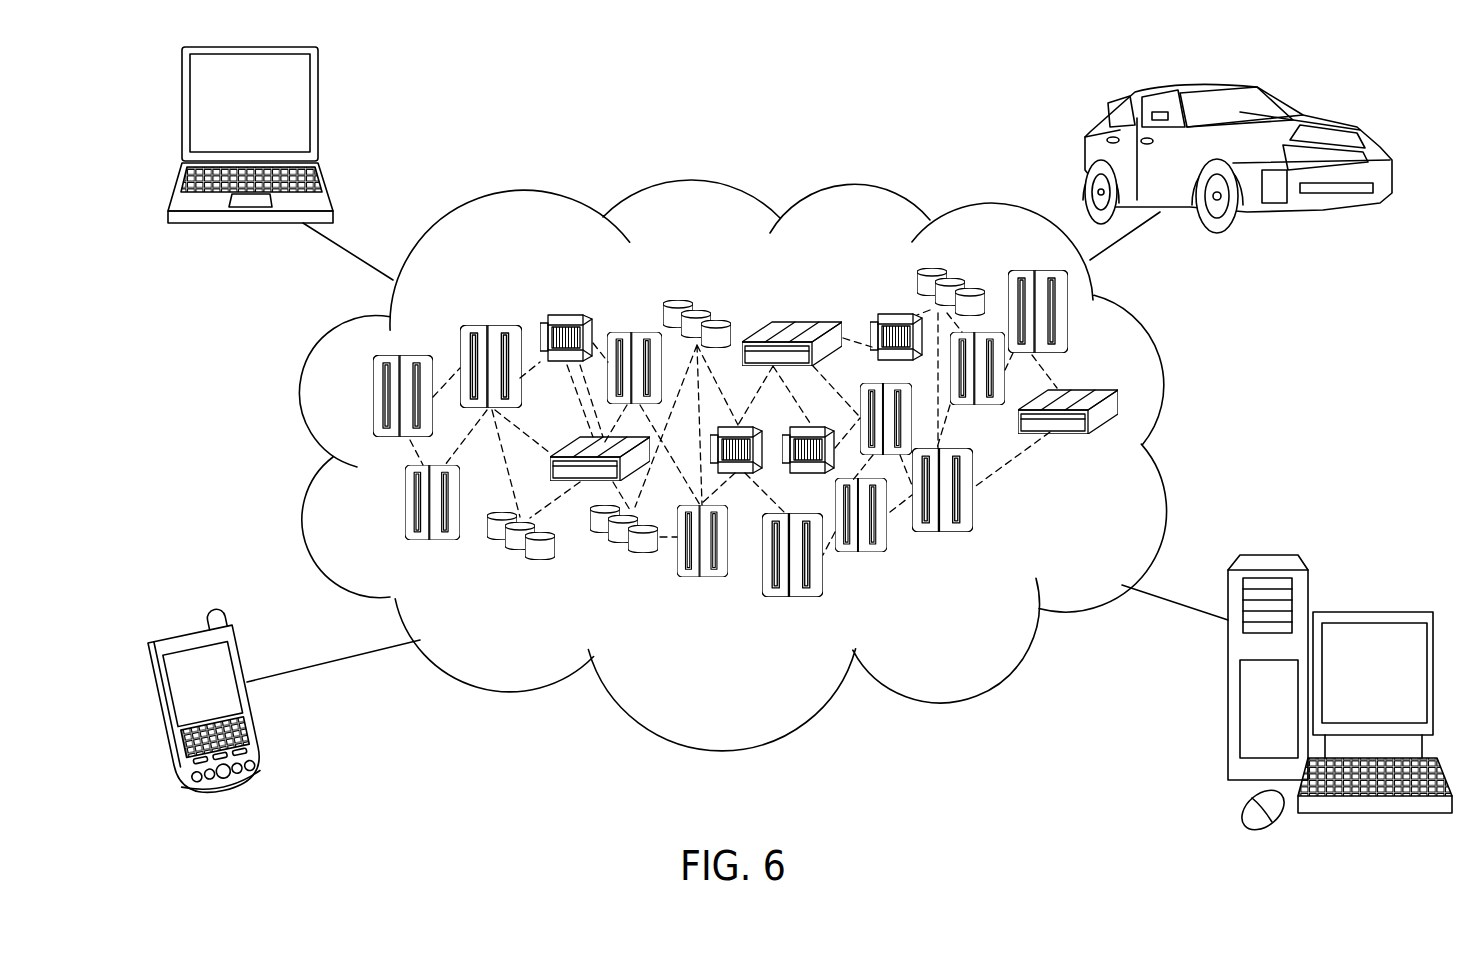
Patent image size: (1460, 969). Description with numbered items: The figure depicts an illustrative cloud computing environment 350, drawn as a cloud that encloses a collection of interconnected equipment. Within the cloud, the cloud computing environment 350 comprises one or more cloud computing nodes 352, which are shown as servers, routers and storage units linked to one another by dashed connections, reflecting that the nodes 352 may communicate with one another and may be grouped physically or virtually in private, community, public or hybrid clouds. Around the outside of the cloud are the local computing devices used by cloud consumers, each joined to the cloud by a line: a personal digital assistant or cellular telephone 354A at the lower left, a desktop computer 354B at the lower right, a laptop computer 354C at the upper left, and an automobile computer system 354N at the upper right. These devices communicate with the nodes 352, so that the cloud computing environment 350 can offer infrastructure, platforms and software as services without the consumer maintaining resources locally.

The cloud computing environment 350 is at (1163, 366).
The cloud computing nodes 352 is at (1150, 464).
The personal digital assistant (PDA) or cellular telephone 354A is at (157, 708).
The desktop computer 354B is at (1366, 612).
The laptop computer 354C is at (182, 111).
The automobile computer system 354N is at (1323, 74).